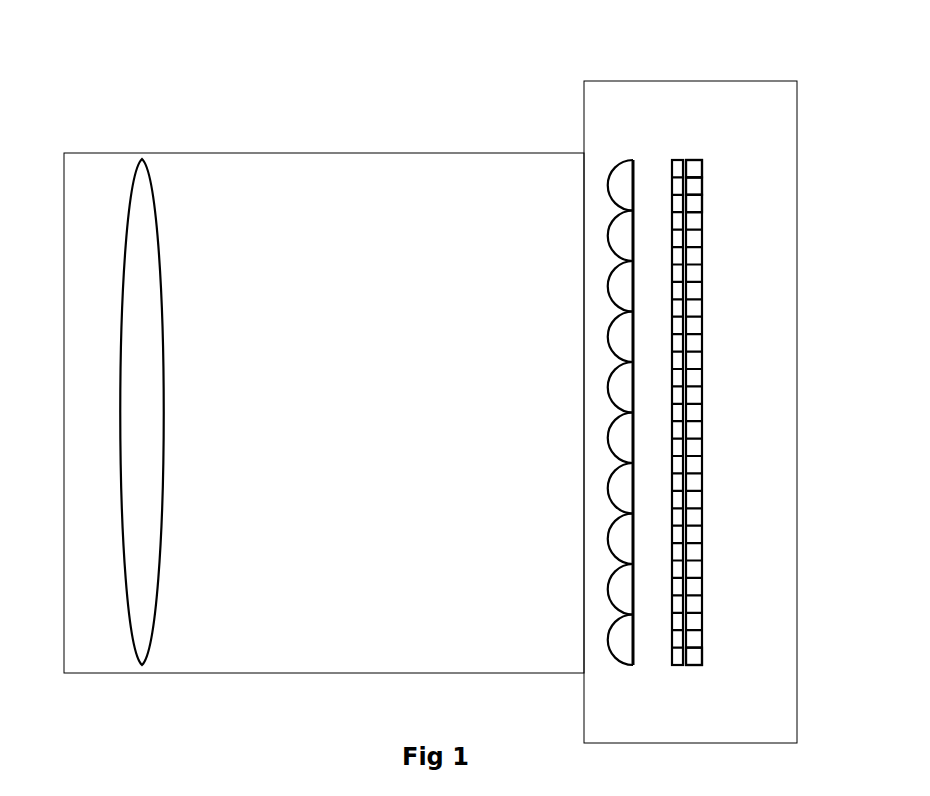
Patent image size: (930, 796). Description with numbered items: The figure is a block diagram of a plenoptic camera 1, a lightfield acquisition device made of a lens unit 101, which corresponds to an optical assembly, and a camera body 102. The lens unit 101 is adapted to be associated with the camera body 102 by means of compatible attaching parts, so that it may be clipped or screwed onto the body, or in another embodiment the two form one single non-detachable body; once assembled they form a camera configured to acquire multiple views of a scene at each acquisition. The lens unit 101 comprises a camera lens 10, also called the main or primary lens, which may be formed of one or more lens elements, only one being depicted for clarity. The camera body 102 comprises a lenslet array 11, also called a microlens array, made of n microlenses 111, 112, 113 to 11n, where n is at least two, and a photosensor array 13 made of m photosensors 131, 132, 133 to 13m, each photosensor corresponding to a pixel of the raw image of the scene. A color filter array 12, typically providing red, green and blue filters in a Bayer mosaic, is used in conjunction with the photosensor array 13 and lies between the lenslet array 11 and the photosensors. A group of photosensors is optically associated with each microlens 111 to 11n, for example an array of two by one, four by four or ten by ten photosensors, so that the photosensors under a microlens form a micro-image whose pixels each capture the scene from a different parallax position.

The plenoptic camera 1 is at (431, 379).
The camera lens 10 is at (124, 290).
The lens unit 101 is at (373, 153).
The camera body 102 is at (583, 138).
The lenslet array 11 is at (570, 340).
The microlens 111 is at (609, 192).
The microlens 112 is at (609, 238).
The microlens 113 is at (609, 287).
The microlens 11n is at (609, 640).
The color filter array 12 is at (673, 150).
The photosensor array 13 is at (742, 344).
The photosensor 131 is at (703, 163).
The photosensor 132 is at (703, 188).
The photosensor 133 is at (703, 204).
The photosensor 13m is at (703, 663).